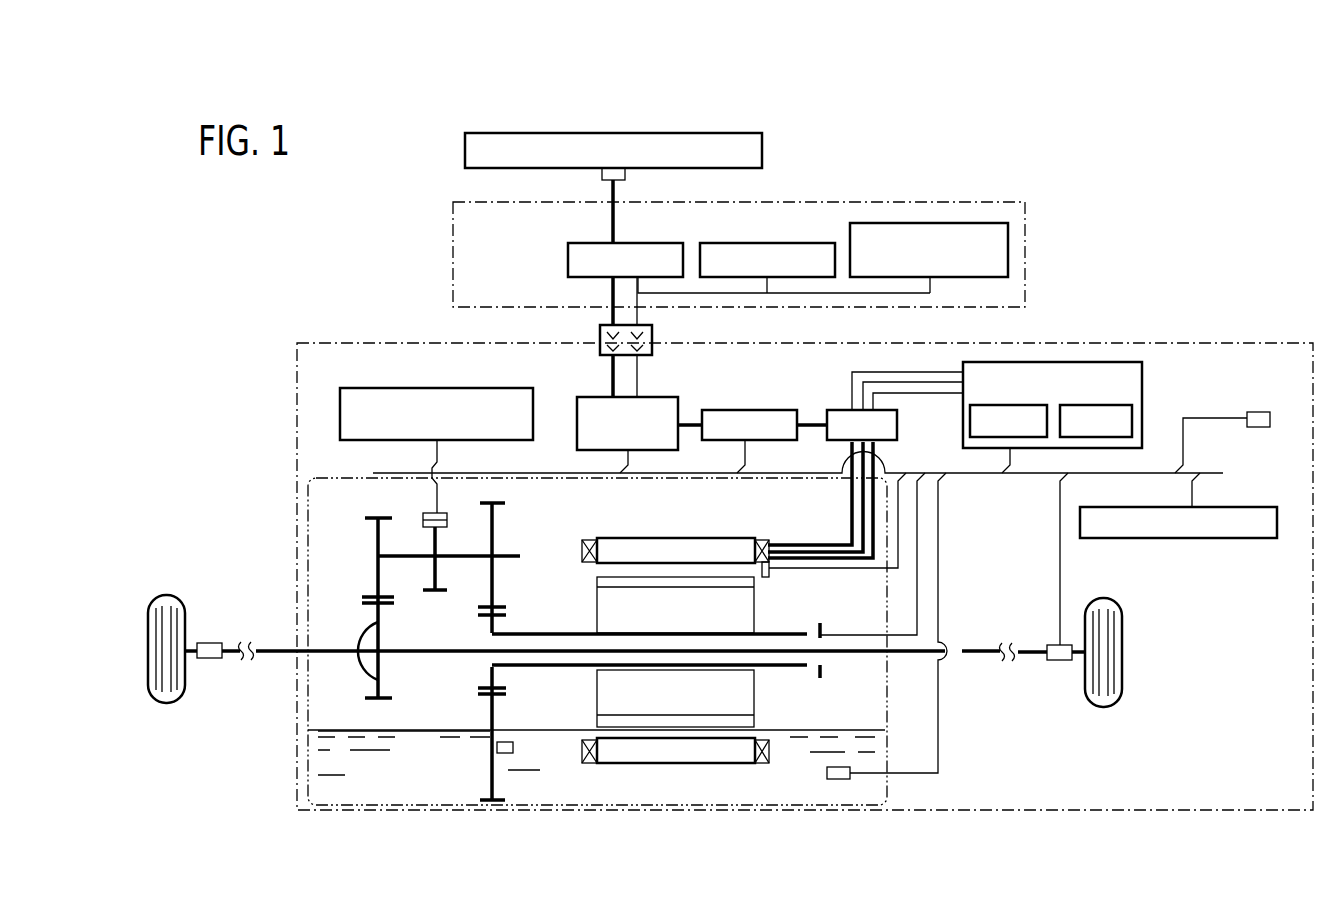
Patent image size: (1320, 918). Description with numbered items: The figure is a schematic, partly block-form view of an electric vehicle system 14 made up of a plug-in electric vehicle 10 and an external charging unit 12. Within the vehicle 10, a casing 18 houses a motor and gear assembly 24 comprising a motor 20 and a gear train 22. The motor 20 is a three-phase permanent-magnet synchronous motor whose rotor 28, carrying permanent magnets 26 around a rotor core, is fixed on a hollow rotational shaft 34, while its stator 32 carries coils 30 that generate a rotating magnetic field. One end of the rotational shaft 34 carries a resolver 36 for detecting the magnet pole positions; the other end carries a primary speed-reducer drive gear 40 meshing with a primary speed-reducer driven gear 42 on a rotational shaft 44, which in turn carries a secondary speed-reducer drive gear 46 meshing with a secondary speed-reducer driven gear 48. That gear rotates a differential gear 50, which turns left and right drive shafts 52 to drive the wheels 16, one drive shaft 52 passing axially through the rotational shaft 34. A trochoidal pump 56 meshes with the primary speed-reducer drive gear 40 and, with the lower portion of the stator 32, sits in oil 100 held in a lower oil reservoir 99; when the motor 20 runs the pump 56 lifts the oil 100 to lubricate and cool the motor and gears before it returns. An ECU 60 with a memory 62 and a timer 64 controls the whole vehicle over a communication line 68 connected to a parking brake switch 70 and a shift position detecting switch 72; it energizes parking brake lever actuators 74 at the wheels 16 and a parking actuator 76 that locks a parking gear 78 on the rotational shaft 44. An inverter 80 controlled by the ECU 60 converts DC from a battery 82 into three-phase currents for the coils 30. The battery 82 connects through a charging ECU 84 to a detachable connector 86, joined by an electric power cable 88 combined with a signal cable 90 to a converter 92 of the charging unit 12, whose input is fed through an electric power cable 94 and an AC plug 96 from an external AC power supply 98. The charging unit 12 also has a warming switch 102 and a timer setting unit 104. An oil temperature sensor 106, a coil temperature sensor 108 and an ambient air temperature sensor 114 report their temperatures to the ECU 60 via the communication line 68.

The plug-in electric vehicle 10 is at (1122, 343).
The external charging unit 12 is at (1026, 225).
The electric vehicle system 14 is at (368, 208).
The wheels 16 is at (163, 595).
The casing 18 is at (297, 556).
The motor 20 is at (647, 651).
The gear train 22 is at (374, 488).
The motor and gear assembly 24 is at (296, 516).
The permanent magnets 26 is at (597, 586).
The rotor 28 is at (597, 613).
The coils 30 is at (589, 540).
The stator 32 is at (676, 538).
The rotational shaft 34 is at (525, 667).
The resolver 36 is at (822, 623).
The primary speed-reducer drive gear 40 is at (500, 615).
The primary speed-reducer driven gear 42 is at (500, 503).
The rotational shaft 44 is at (480, 556).
The secondary speed-reducer drive gear 46 is at (368, 518).
The secondary speed-reducer driven gear 48 is at (390, 603).
The differential gear 50 is at (358, 645).
The drive shafts 52 is at (280, 653).
The trochoidal pump 56 is at (513, 747).
The ECU 60 is at (1073, 417).
The memory 62 is at (1028, 405).
The timer 64 is at (1113, 405).
The communication line 68 is at (1154, 472).
The parking brake switch 70 is at (1260, 538).
The shift position detecting switch 72 is at (483, 388).
The parking brake lever actuators 74 is at (213, 658).
The parking actuator 76 is at (425, 513).
The parking gear 78 is at (443, 592).
The inverter 80 is at (897, 425).
The battery 82 is at (764, 410).
The charging ECU 84 is at (661, 397).
The detachable connector 86 is at (598, 353).
The electric power cable 88 is at (603, 327).
The signal cable 90 is at (645, 327).
The converter 92 is at (663, 243).
The electric power cable 94 is at (613, 228).
The AC plug 96 is at (625, 176).
The external AC power supply 98 is at (594, 133).
The oil reservoir 99 is at (314, 794).
The oil 100 is at (408, 740).
The warming switch 102 is at (763, 243).
The timer setting unit 104 is at (926, 223).
The oil temperature sensor 106 is at (827, 773).
The coil temperature sensor 108 is at (769, 578).
The ambient air temperature sensor 114 is at (1258, 412).